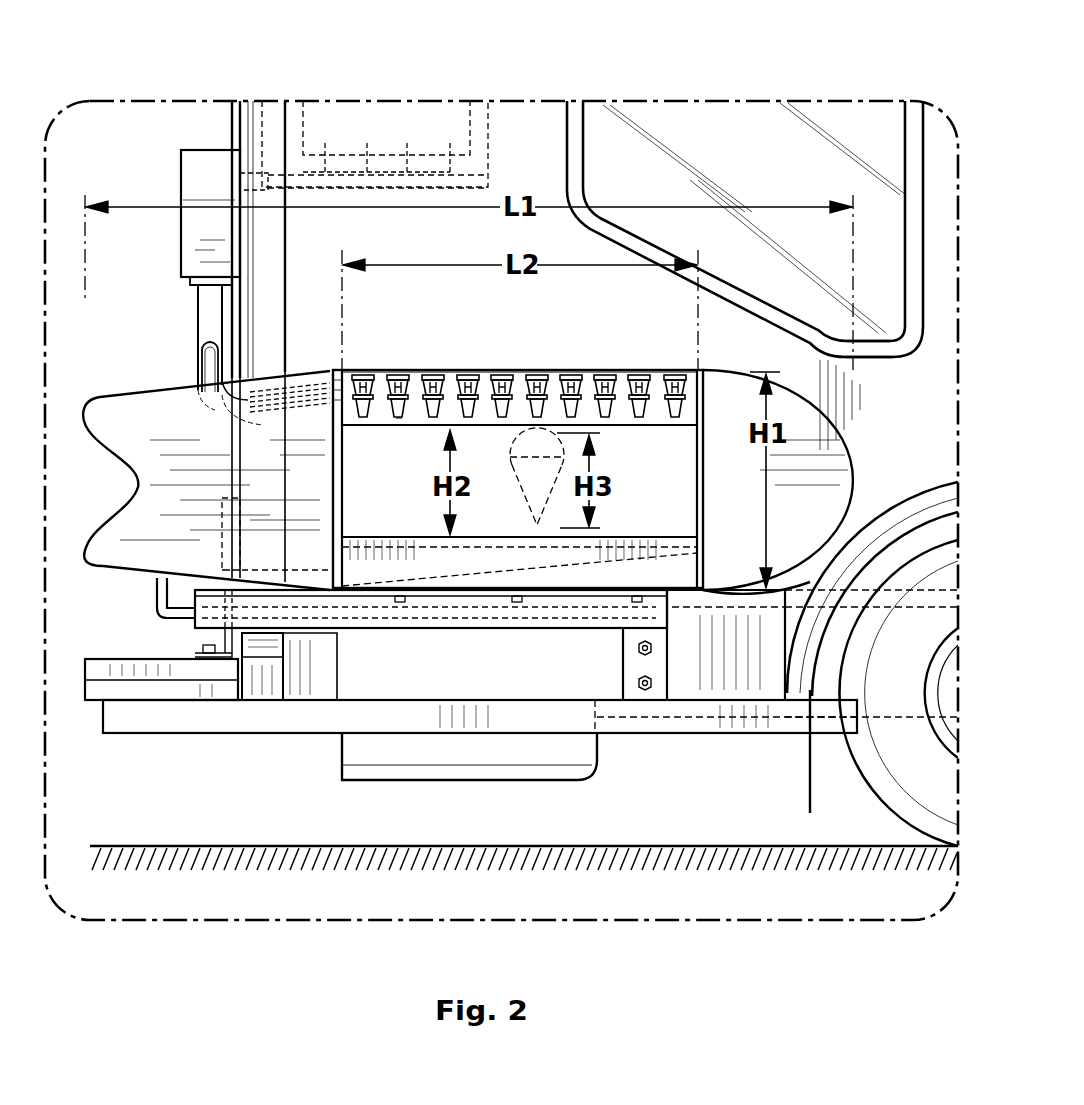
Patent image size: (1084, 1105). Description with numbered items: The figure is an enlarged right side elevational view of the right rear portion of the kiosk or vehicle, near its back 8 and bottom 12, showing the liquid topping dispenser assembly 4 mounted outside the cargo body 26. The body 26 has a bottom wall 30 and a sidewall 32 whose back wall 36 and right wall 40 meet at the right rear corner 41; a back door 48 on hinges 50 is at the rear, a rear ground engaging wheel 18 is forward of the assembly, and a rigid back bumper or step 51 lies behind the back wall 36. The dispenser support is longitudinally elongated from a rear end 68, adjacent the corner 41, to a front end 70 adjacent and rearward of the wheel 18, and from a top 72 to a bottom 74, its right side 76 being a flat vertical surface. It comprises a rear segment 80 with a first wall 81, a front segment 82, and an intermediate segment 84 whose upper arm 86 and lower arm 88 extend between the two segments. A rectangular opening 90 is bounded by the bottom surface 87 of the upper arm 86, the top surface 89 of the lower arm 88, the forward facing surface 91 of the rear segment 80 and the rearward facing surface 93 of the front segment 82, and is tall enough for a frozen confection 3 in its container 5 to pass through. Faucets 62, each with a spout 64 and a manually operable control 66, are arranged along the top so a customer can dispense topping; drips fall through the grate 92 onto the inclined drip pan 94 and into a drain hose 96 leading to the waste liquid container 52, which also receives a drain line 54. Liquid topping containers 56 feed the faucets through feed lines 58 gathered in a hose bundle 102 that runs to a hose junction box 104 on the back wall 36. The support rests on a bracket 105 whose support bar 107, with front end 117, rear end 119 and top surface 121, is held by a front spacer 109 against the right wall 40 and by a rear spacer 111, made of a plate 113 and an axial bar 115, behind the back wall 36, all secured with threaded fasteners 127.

The back 8 is at (110, 142).
The bottom 12 is at (737, 745).
The back door 48 is at (230, 130).
The hose cover or hose junction box 104 is at (181, 175).
The back wall 36 is at (240, 250).
The right rear corner 41 is at (262, 297).
The rear segment 80 is at (159, 355).
The first wall 81 is at (142, 395).
The hose bundle 102 is at (207, 363).
The rear end 68 is at (85, 414).
The hinges 50 is at (162, 537).
The feed lines 58 is at (252, 393).
The liquid topping containers 56 is at (295, 110).
The cargo body or box 26 is at (724, 201).
The sidewall 32 is at (724, 201).
The right wall 40 is at (527, 142).
The front segment 82 is at (793, 392).
The front end 70 is at (855, 477).
The top 72 is at (600, 370).
The faucets 62 is at (428, 371).
The control 66 is at (502, 373).
The spout 64 is at (604, 420).
The bottom surface 87 is at (364, 427).
The upper arm 86 is at (412, 421).
The forward facing surface 91 is at (342, 496).
The top surface 89 is at (426, 537).
The rearward facing surface 93 is at (697, 522).
The rectangular opening 90 is at (697, 487).
The frozen confection 3 is at (518, 445).
The container 5 is at (522, 491).
The grate 92 is at (457, 546).
The drip pan 94 is at (508, 558).
The first side 76 is at (822, 526).
The liquid topping dispenser assembly 4 is at (840, 420).
The drain hose 96 is at (157, 597).
The top surface 121 is at (606, 596).
The rear end 119 is at (195, 611).
The fasteners 127 is at (203, 647).
The back bumper or step 51 is at (138, 690).
The bracket 105 is at (480, 724).
The support bar 107 is at (325, 630).
The axial bar 115 is at (222, 657).
The rear spacer 111 is at (200, 674).
The plate 113 is at (88, 668).
The waste liquid container 52 is at (422, 785).
The intermediate segment 84 is at (519, 630).
The lower arm 88 is at (569, 586).
The front spacer 109 is at (655, 695).
The front end 117 is at (681, 592).
The bottom 74 is at (686, 589).
The drain line 54 is at (773, 718).
The ground engaging wheels 18 is at (900, 750).
The bottom wall 30 is at (848, 600).